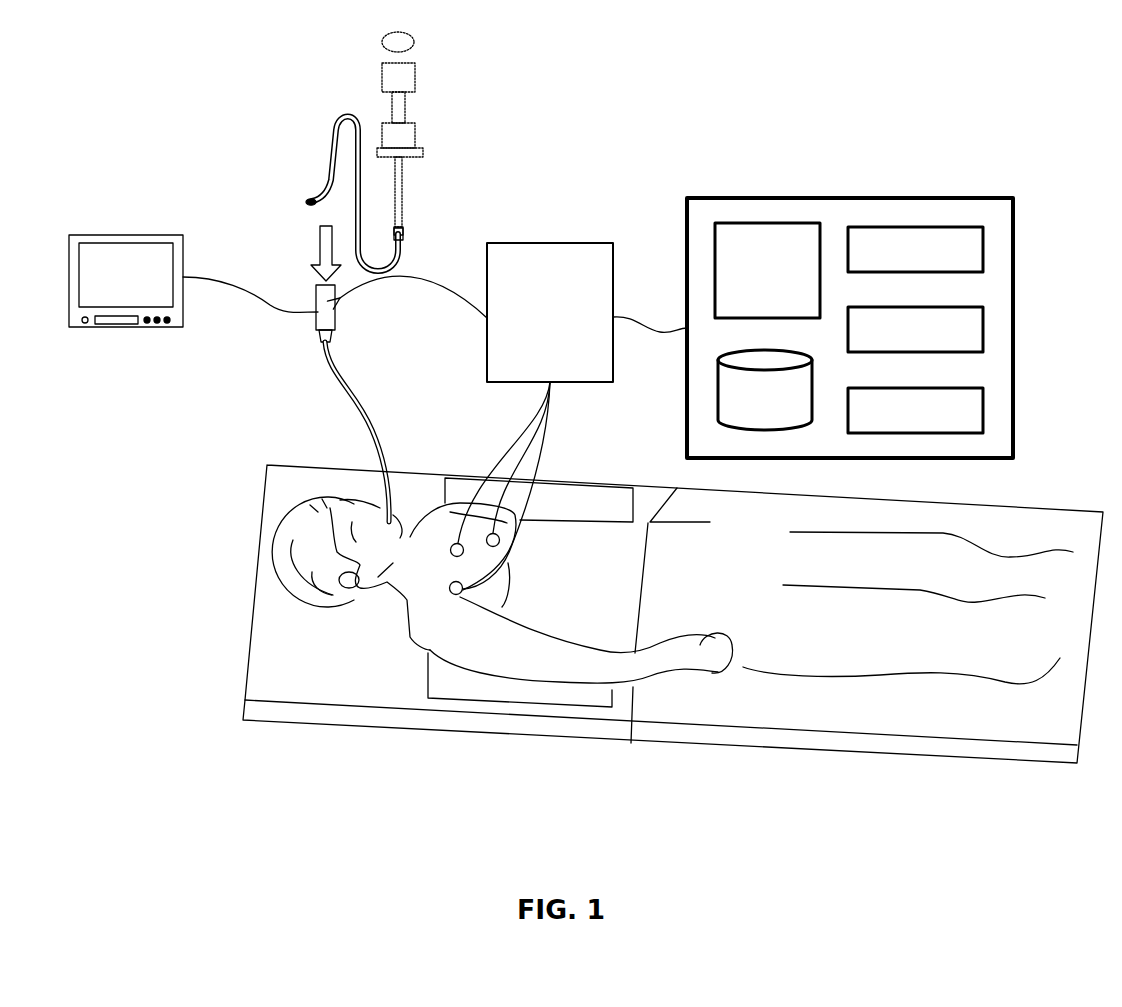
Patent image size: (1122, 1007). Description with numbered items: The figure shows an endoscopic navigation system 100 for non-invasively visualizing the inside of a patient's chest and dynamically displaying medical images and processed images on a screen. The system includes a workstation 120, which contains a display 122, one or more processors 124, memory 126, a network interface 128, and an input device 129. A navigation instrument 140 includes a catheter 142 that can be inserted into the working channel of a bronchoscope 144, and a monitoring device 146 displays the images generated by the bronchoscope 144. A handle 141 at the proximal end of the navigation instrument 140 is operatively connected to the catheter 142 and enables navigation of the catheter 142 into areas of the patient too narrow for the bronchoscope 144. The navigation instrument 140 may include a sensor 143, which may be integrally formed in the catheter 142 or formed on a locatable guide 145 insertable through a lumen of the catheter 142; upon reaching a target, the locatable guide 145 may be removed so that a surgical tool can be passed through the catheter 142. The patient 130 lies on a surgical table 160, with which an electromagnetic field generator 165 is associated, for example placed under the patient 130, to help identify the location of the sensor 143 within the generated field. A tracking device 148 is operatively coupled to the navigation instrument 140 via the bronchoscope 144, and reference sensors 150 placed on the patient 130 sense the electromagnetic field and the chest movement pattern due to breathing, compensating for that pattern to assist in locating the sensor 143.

The endoscopic navigation system 100 is at (651, 86).
The workstation 120 is at (800, 189).
The display 122 is at (787, 287).
The processors 124 is at (935, 265).
The memory 126 is at (786, 412).
The network interface 128 is at (935, 345).
The input device 129 is at (935, 428).
The patient 130 is at (300, 516).
The navigation instrument 140 is at (456, 88).
The handle 141 is at (364, 94).
The catheter 142 is at (406, 249).
The sensor 143 is at (306, 196).
The bronchoscope 144 is at (363, 400).
The locatable guide 145 is at (329, 164).
The monitoring device 146 is at (140, 234).
The tracking device 148 is at (570, 332).
The reference sensors 150 is at (524, 581).
The surgical table 160 is at (287, 665).
The EM field generator 165 is at (463, 677).